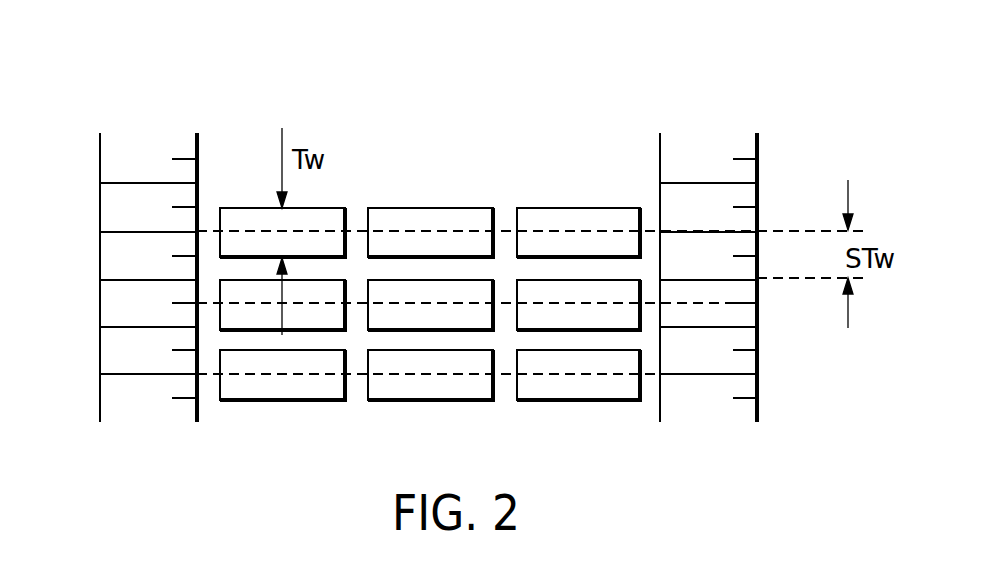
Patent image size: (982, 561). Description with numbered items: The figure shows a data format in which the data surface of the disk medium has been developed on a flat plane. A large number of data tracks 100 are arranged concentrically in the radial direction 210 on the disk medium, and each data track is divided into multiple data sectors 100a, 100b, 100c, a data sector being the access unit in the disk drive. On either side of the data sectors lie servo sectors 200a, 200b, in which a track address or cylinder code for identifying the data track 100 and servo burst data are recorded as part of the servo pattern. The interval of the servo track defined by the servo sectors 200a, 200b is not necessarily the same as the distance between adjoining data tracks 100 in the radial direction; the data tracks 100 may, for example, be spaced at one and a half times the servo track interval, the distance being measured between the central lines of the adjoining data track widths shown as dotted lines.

The data track 100 is at (430, 227).
The data sector 100a is at (338, 207).
The data sector 100b is at (465, 207).
The data sector 100c is at (578, 272).
The servo sector 200a is at (114, 238).
The servo sector 200b is at (757, 109).
The radial direction 210 is at (100, 296).